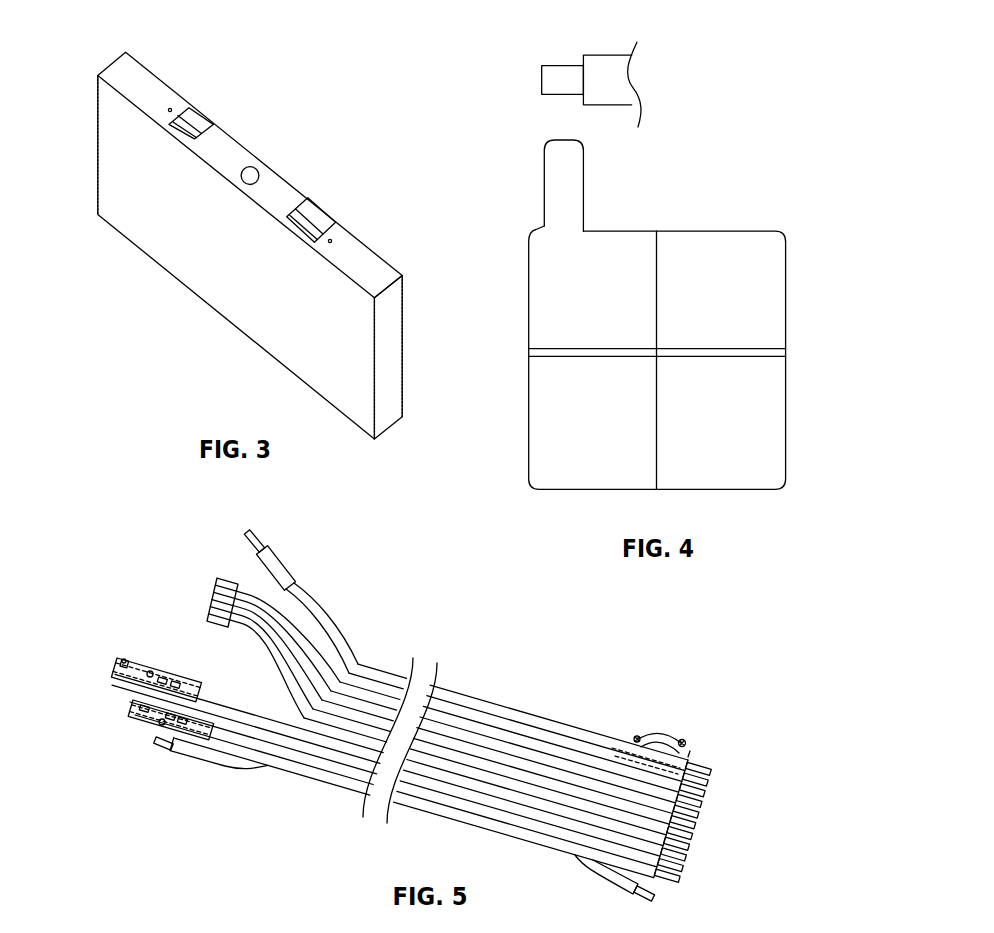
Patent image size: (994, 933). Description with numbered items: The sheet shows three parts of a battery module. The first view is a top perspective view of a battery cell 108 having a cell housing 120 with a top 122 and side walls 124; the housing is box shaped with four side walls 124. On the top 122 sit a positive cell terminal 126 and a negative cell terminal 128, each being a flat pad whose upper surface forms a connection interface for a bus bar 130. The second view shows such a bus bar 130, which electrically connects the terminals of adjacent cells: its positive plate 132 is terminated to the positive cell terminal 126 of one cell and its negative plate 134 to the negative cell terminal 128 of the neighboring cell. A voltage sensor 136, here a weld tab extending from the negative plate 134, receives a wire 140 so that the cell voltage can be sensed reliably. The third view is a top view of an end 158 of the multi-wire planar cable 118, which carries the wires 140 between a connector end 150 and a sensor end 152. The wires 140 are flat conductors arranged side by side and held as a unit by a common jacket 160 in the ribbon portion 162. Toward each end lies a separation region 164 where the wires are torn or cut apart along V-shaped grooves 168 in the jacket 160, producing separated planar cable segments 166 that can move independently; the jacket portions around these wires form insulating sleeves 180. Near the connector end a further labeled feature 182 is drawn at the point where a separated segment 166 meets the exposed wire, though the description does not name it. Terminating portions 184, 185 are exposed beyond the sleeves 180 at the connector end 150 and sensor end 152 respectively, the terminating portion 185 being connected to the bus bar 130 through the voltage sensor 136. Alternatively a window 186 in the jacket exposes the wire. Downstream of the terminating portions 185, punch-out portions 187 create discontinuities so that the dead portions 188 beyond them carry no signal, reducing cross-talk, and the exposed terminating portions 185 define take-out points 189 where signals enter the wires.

In FIG. 3, the battery cell 108 is at (318, 85).
In FIG. 3, the cell housing 120 is at (274, 276).
In FIG. 3, the top 122 is at (139, 69).
In FIG. 3, the side walls 124 is at (98, 150).
In FIG. 3, the positive cell terminal 126 is at (206, 118).
In FIG. 3, the negative cell terminal 128 is at (320, 212).
In FIG. 4, the bus bar 130 is at (728, 160).
In FIG. 4, the positive plate 132 is at (769, 294).
In FIG. 4, the negative plate 134 is at (547, 296).
In FIG. 4, the voltage sensor 136 is at (568, 196).
In FIG. 4, the wire 140 is at (566, 76).
In FIG. 5, the wire 140 is at (220, 578).
In FIG. 5, the multi-wire planar cable 118 is at (556, 677).
In FIG. 5, the connector end 150 is at (709, 838).
In FIG. 5, the sensor end 152 is at (113, 598).
In FIG. 5, the end 158 is at (755, 746).
In FIG. 5, the common jacket 160 is at (482, 703).
In FIG. 5, the ribbon portion 162 is at (410, 842).
In FIG. 5, the separation region 164 is at (349, 594).
In FIG. 5, the separated planar cable segments 166 is at (196, 597).
In FIG. 5, the grooves 168 is at (568, 732).
In FIG. 5, the insulating sleeves 180 is at (282, 575).
In FIG. 5, the joint 182 is at (686, 732).
In FIG. 5, the terminating portion 184 is at (720, 768).
In FIG. 5, the terminating portion 185 is at (238, 516).
In FIG. 5, the window 186 is at (131, 650).
In FIG. 5, the punch-out portion 187 is at (154, 665).
In FIG. 5, the dead portion 188 is at (112, 667).
In FIG. 5, the take-out points 189 is at (160, 683).